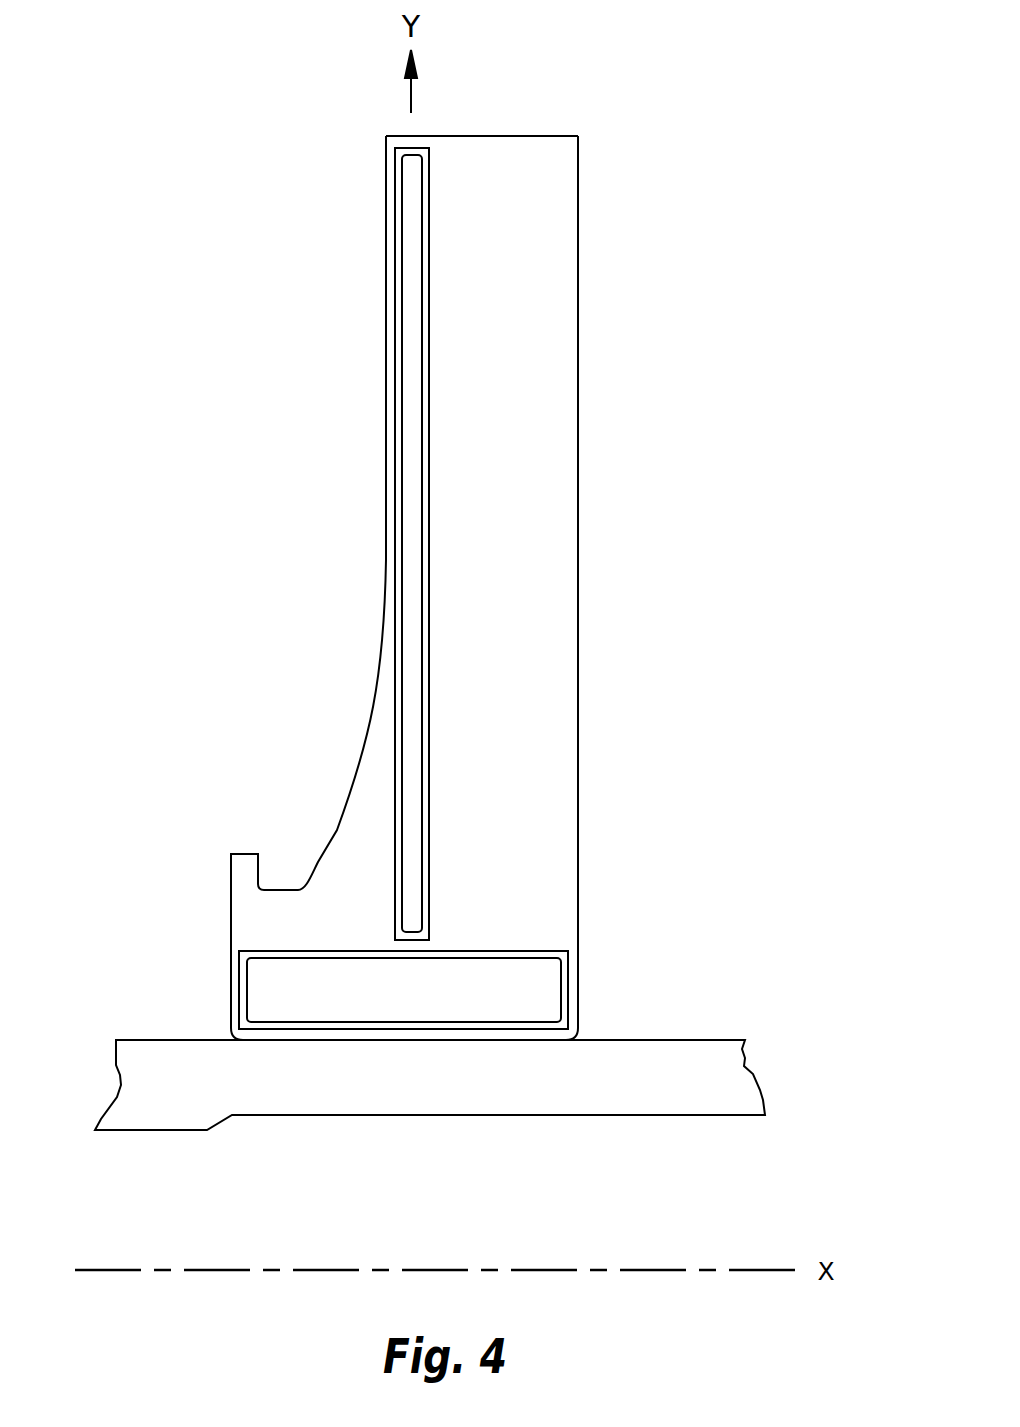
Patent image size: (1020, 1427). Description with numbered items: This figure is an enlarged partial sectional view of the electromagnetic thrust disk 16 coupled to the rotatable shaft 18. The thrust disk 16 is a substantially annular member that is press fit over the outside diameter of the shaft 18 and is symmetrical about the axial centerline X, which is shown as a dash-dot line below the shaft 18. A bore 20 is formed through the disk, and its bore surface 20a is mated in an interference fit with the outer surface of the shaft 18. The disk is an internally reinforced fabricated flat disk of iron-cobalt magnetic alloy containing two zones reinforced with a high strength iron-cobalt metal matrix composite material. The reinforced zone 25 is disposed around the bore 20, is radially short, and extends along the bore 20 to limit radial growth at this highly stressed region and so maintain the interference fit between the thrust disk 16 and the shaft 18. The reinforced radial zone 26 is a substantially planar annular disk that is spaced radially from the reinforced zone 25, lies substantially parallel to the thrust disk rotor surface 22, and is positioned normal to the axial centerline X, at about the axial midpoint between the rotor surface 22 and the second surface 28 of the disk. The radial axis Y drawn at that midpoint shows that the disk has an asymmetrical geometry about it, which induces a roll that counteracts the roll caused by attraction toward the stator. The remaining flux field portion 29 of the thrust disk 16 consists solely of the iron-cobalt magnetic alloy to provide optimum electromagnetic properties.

The magnetic thrust disk 16 is at (409, 588).
The shaft 18 is at (682, 1095).
The bore 20 is at (563, 1023).
The bore surface 20a is at (329, 1041).
The thrust disk rotor surface 22 is at (578, 746).
The reinforced zone 25 is at (542, 992).
The reinforced radial zone 26 is at (412, 637).
The second surface 28 is at (231, 930).
The flux field portion 29 is at (533, 307).